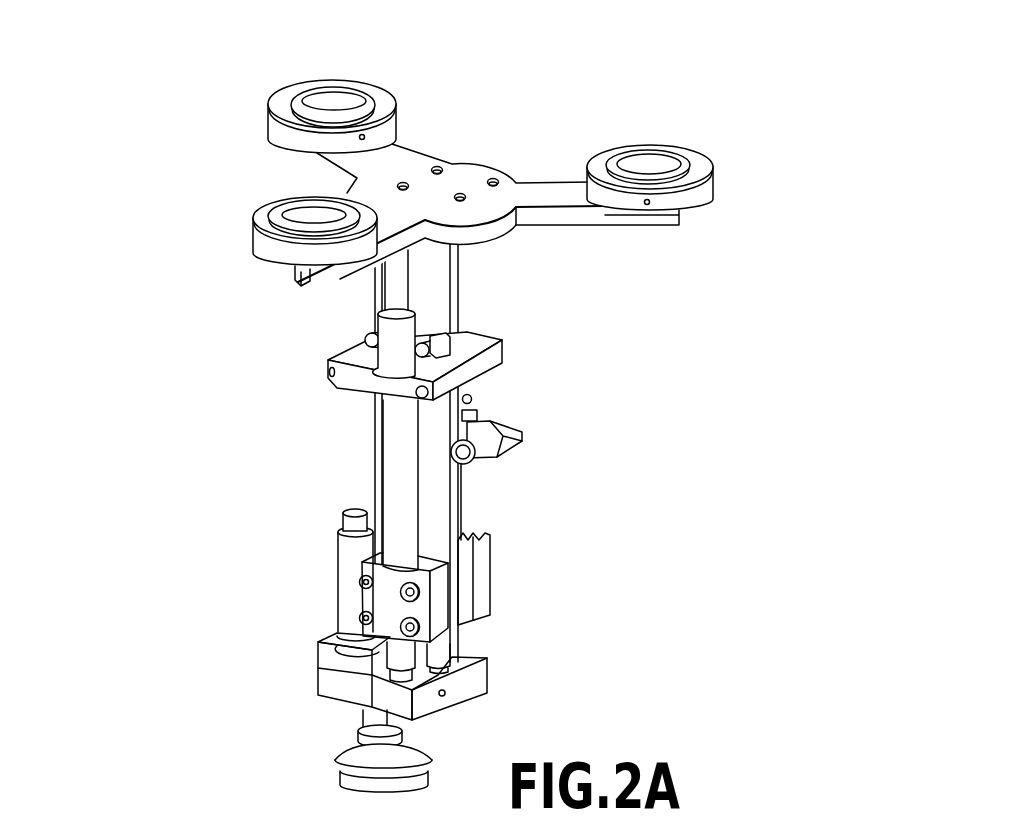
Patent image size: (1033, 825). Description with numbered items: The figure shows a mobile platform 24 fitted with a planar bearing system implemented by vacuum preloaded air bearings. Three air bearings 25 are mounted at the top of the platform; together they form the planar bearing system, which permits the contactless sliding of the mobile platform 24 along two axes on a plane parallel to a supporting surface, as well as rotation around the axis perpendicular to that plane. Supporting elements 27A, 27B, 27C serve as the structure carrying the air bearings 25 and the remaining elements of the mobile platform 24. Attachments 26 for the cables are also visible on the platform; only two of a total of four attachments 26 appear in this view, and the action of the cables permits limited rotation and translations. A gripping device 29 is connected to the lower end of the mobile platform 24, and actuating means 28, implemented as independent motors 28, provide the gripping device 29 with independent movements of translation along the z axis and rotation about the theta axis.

The mobile platform 24 is at (736, 101).
The air bearing 25 is at (348, 97).
The attachment 26 is at (330, 371).
The supporting element 27A is at (503, 232).
The supporting element 27B is at (446, 290).
The supporting element 27C is at (477, 368).
The actuating means 28 is at (410, 500).
The gripping device 29 is at (345, 752).